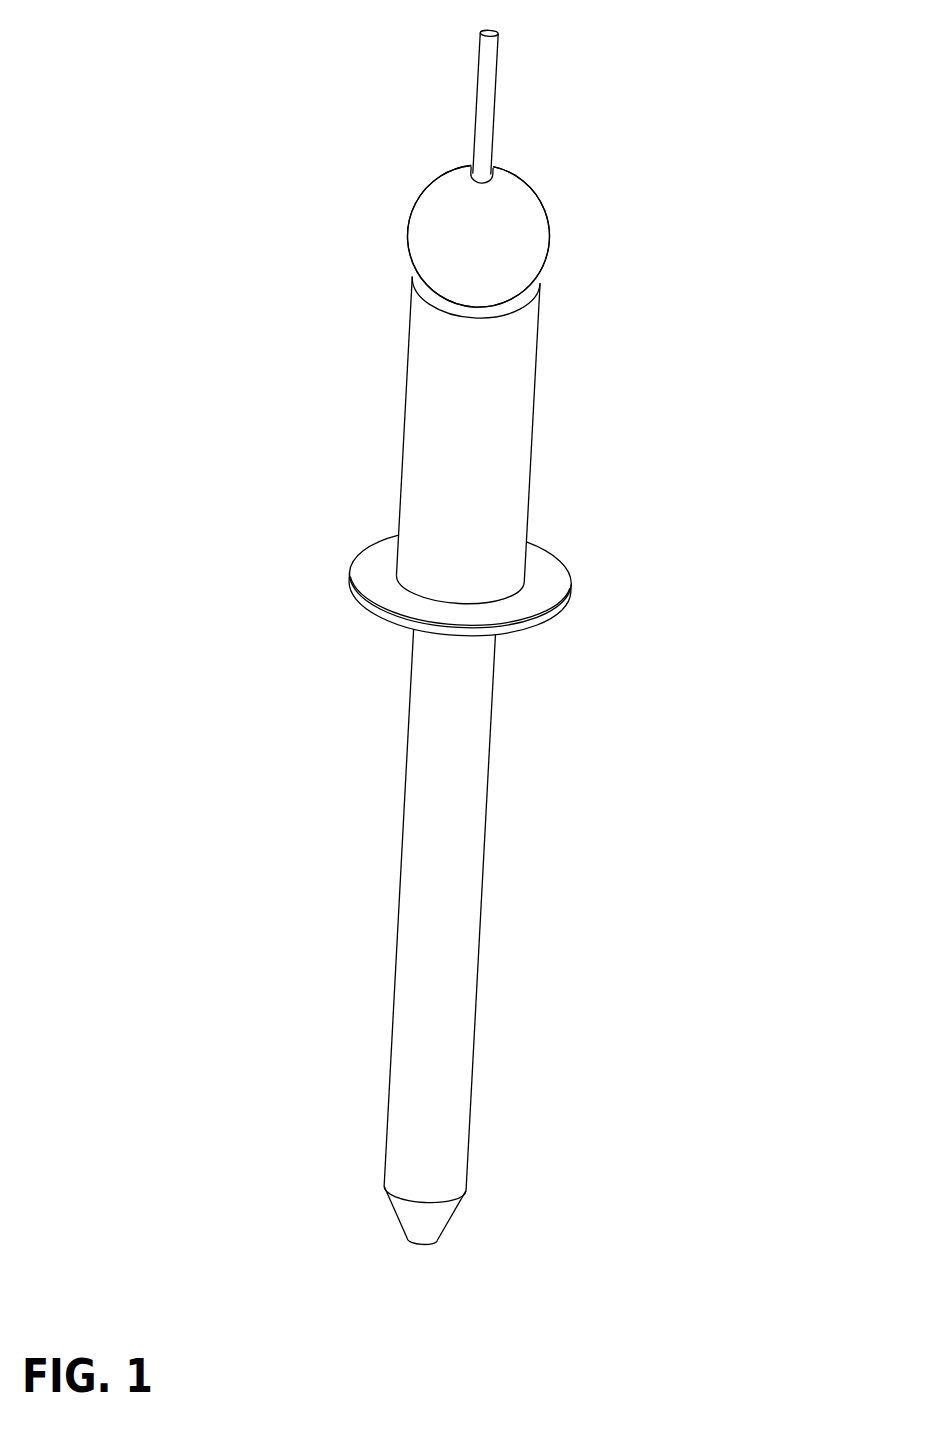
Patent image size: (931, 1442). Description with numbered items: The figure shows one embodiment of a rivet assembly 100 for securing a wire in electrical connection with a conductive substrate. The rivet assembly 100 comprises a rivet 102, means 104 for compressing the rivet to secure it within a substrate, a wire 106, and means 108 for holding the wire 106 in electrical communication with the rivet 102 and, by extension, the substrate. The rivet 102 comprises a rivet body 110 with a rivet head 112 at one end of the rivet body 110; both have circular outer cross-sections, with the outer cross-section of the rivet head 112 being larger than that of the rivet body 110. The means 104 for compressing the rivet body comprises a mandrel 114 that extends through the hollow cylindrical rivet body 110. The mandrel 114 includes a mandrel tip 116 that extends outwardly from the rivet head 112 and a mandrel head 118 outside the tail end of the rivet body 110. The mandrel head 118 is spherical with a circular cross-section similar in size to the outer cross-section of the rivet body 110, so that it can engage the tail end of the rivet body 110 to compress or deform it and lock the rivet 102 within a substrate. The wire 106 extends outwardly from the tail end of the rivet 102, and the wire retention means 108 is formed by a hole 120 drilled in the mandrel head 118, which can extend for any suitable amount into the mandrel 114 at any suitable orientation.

The rivet assembly 100 is at (783, 264).
The rivet 102 is at (567, 451).
The means for compressing the rivet 104 is at (203, 637).
The wire 106 is at (498, 70).
The means for holding the wire 108 is at (500, 158).
The rivet body 110 is at (407, 403).
The rivet head 112 is at (571, 596).
The mandrel 114 is at (410, 750).
The mandrel tip 116 is at (397, 1223).
The mandrel head 118 is at (408, 233).
The hole 120 is at (465, 157).